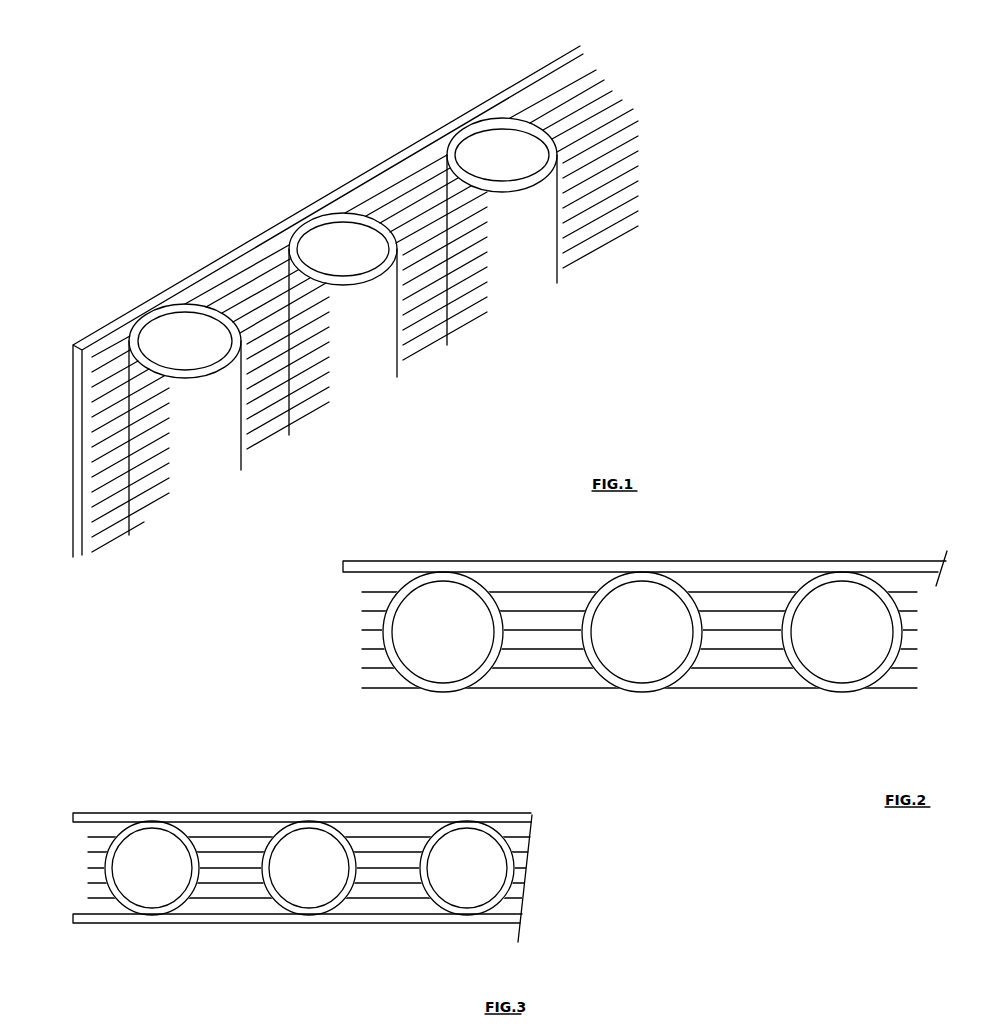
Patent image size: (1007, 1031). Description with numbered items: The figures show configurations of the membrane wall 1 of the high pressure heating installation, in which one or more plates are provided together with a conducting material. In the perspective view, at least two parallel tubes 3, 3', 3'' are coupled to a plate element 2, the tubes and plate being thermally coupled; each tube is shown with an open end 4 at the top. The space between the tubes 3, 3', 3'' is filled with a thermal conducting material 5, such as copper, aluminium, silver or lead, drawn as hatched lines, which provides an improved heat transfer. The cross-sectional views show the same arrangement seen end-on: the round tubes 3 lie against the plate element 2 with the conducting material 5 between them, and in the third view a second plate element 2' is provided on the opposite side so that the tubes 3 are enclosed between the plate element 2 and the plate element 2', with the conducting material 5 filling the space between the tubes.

In FIG. 1, the membrane wall 1 is at (648, 102).
In FIG. 1, the plate element 2 is at (306, 301).
In FIG. 3, the plate element 2 is at (287, 790).
In FIG. 3, the plate element 2' is at (297, 945).
In FIG. 1, the tube 3 is at (185, 438).
In FIG. 2, the tube 3 is at (642, 668).
In FIG. 3, the tube 3 is at (309, 896).
In FIG. 1, the tube 3' is at (343, 342).
In FIG. 1, the tube 3'' is at (502, 250).
In FIG. 1, the tube opening 4 is at (138, 310).
In FIG. 1, the thermal conducting material 5 is at (270, 418).
In FIG. 2, the thermal conducting material 5 is at (722, 660).
In FIG. 3, the thermal conducting material 5 is at (380, 892).